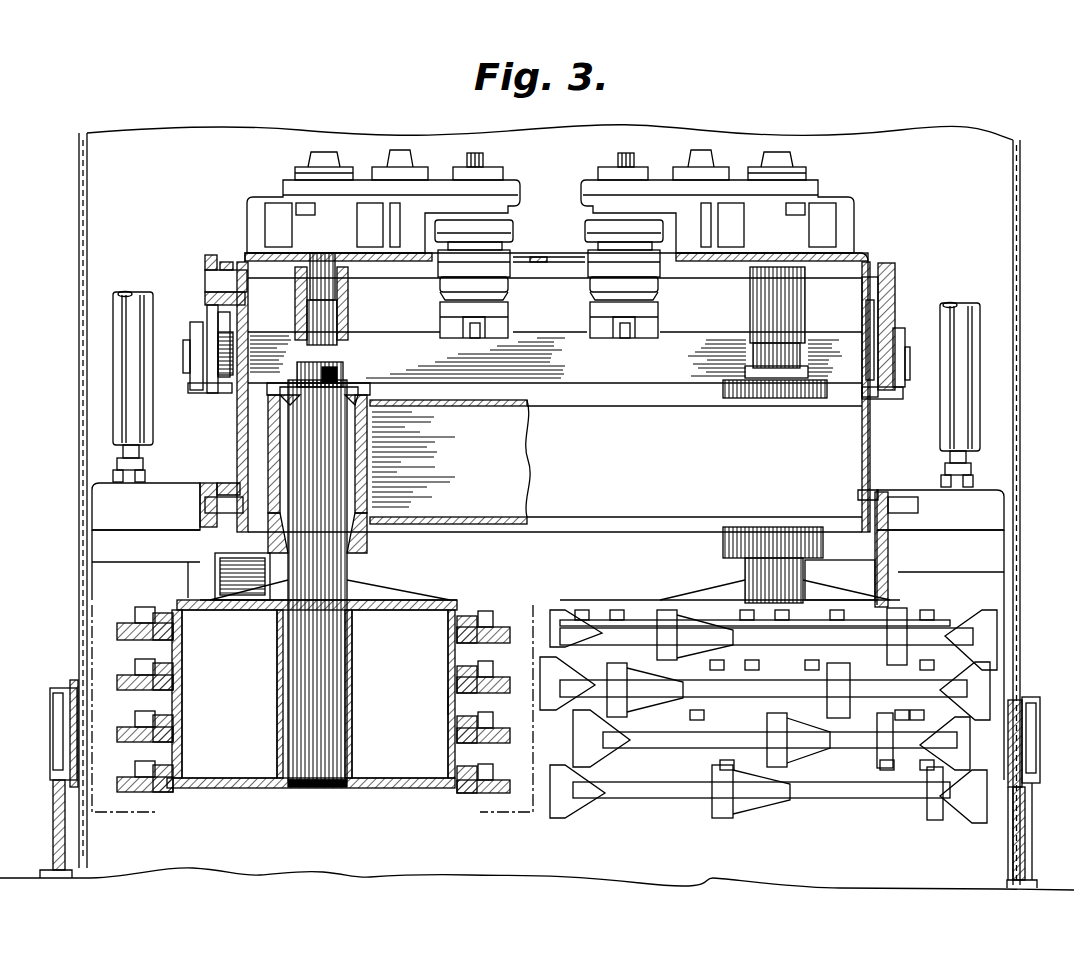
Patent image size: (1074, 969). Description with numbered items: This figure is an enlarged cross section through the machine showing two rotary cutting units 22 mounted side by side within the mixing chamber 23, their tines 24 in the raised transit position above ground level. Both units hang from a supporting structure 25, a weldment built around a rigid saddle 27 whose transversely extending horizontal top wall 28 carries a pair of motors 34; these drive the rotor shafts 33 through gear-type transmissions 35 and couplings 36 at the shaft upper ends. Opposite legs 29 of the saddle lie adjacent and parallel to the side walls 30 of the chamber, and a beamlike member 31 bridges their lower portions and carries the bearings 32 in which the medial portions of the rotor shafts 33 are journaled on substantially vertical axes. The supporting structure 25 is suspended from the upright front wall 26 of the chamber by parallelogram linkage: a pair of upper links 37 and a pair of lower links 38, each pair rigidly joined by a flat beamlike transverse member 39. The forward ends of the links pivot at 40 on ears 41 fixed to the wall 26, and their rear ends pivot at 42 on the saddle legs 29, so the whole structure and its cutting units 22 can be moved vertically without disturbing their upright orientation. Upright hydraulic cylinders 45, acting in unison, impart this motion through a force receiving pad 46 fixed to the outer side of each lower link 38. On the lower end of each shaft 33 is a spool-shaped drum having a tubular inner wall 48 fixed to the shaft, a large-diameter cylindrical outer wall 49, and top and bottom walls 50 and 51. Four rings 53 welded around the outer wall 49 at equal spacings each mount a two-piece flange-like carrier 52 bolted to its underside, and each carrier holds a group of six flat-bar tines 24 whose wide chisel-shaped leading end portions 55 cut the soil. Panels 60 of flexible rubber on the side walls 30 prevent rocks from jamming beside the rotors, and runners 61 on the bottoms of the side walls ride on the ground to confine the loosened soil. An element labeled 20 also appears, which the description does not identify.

The spring assembly 20 is at (120, 600).
The rotary cutting units 22 is at (445, 600).
The mixing chamber 23 is at (95, 398).
The tines 24 is at (560, 618).
The supporting structure 25 is at (866, 258).
The upright wall 26 is at (882, 160).
The rigid saddle 27 is at (250, 253).
The top wall 28 is at (530, 258).
The legs 29 is at (240, 433).
The side walls 30 is at (80, 430).
The beamlike member 31 is at (625, 413).
The bearings 32 is at (385, 400).
The rotor shafts 33 is at (347, 578).
The motors 34 is at (513, 312).
The gear-type transmissions 35 is at (388, 180).
The couplings 36 is at (348, 300).
The upper links 37 is at (205, 305).
The lower links 38 is at (262, 575).
The transverse member 39 is at (558, 383).
The pivotal connection 40 is at (190, 348).
The ears 41 is at (205, 397).
The pivotal connection 42 is at (245, 285).
The hydraulic cylinders 45 is at (125, 345).
The force receiving pad 46 is at (98, 483).
The tubular inner wall 48 is at (350, 688).
The cylindrical outer wall 49 is at (448, 704).
The top wall 50 is at (383, 612).
The bottom wall 51 is at (370, 778).
The carrier 52 is at (510, 627).
The ring 53 is at (478, 616).
The leading end portion 55 is at (650, 610).
The panel 60 is at (68, 840).
The runners 61 is at (40, 875).